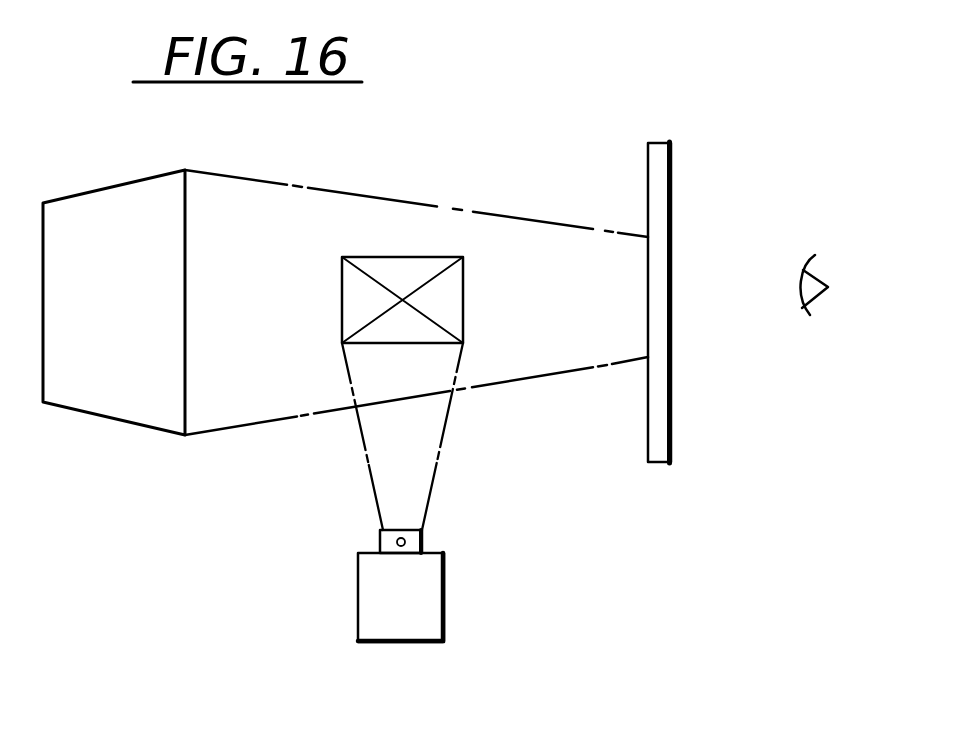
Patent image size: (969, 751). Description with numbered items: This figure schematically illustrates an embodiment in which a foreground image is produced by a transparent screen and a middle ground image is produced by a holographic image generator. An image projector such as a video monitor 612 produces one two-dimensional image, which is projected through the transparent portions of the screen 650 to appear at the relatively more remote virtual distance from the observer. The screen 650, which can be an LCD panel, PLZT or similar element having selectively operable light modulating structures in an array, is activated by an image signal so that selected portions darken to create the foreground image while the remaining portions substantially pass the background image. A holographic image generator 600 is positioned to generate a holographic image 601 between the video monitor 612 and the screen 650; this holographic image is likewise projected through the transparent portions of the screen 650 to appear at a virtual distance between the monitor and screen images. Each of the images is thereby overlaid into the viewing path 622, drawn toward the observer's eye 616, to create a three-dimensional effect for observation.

The video monitor 612 is at (130, 423).
The holographic image 601 is at (425, 256).
The holographic image generator 600 is at (432, 643).
The screen 650 is at (658, 463).
The viewing path 622 is at (763, 310).
The eye of observer 616 is at (808, 270).